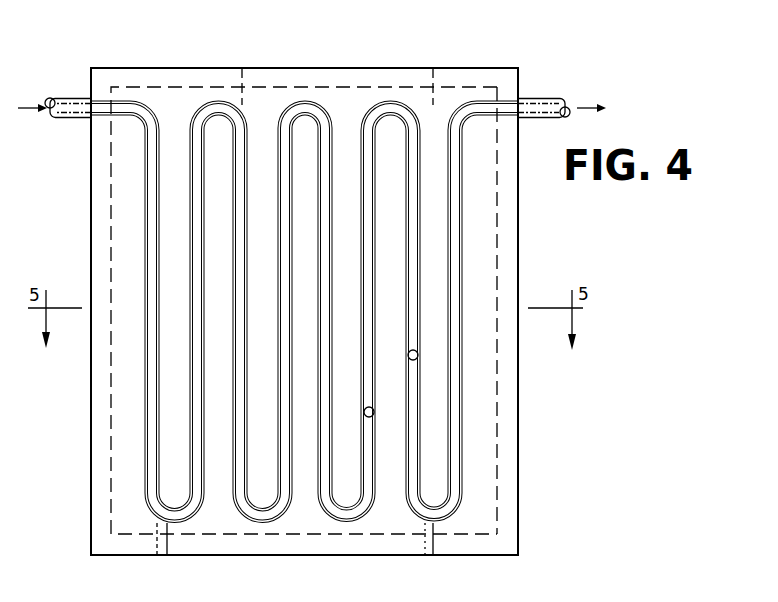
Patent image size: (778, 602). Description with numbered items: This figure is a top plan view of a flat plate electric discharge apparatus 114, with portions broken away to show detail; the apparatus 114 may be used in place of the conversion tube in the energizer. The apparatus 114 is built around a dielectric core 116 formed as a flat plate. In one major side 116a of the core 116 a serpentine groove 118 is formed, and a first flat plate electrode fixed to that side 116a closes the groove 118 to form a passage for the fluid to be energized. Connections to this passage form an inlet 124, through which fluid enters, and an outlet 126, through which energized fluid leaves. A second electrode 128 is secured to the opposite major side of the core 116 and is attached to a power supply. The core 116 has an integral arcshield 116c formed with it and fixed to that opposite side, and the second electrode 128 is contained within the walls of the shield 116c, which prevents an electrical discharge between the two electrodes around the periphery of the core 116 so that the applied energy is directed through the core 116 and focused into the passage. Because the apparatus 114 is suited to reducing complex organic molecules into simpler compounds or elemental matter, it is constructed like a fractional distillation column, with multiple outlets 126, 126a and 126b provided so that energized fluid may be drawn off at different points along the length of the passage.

The flat plate electric discharge apparatus 114 is at (345, 283).
The dielectric core 116 is at (523, 236).
The major side 116a is at (437, 274).
The arcshield 116c is at (502, 462).
The serpentine groove 118 is at (298, 104).
The inlet 124 is at (80, 97).
The outlet 126 is at (536, 97).
The outlet 126a is at (375, 411).
The outlet 126b is at (419, 358).
The second electrode 128 is at (478, 503).